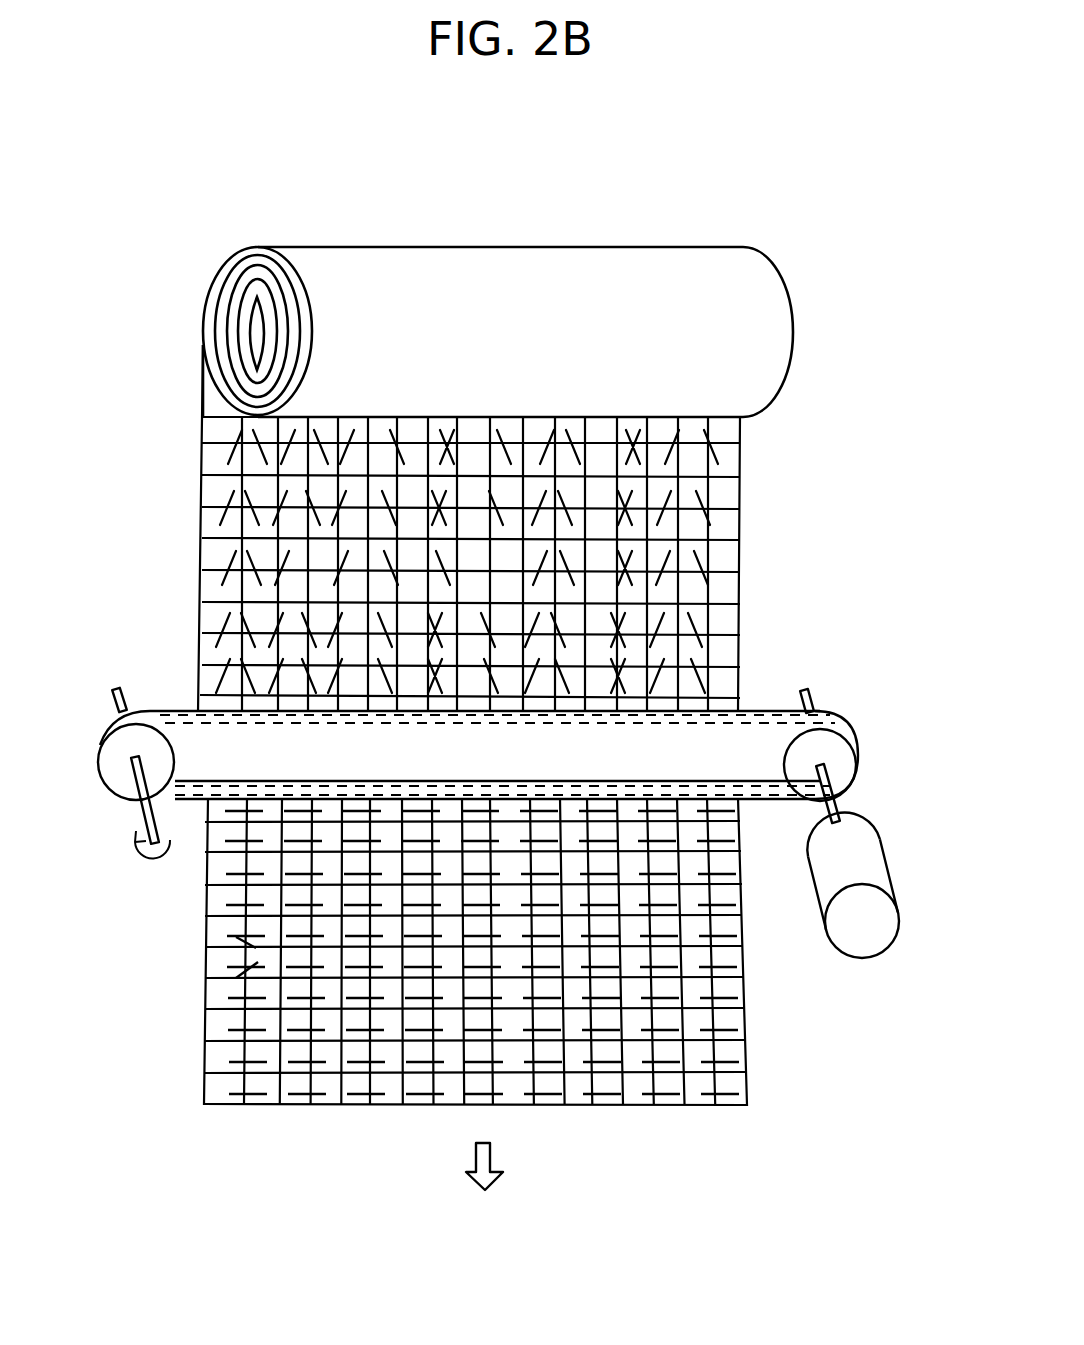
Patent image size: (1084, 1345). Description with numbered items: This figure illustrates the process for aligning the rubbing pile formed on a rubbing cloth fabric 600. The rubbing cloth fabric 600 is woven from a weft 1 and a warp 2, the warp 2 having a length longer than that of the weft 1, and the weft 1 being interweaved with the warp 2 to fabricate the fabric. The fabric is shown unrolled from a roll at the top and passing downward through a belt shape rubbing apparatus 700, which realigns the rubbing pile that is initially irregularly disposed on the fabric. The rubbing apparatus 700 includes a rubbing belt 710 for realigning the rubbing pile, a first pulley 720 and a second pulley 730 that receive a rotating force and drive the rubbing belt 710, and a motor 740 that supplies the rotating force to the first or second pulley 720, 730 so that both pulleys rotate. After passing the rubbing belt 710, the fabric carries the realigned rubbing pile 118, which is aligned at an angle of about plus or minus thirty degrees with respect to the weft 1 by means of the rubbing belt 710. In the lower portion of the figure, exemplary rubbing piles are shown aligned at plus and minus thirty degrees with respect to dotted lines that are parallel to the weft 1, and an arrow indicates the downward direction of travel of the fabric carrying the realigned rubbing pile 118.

The weft 1 is at (727, 450).
The warp 2 is at (710, 547).
The rubbing cloth fabric 600 is at (661, 233).
The rubbing apparatus 700 is at (842, 697).
The rubbing belt 710 is at (756, 711).
The first pulley 720 is at (856, 765).
The second pulley 730 is at (113, 742).
The motor 740 is at (868, 945).
The realigned rubbing pile 118 is at (734, 1090).